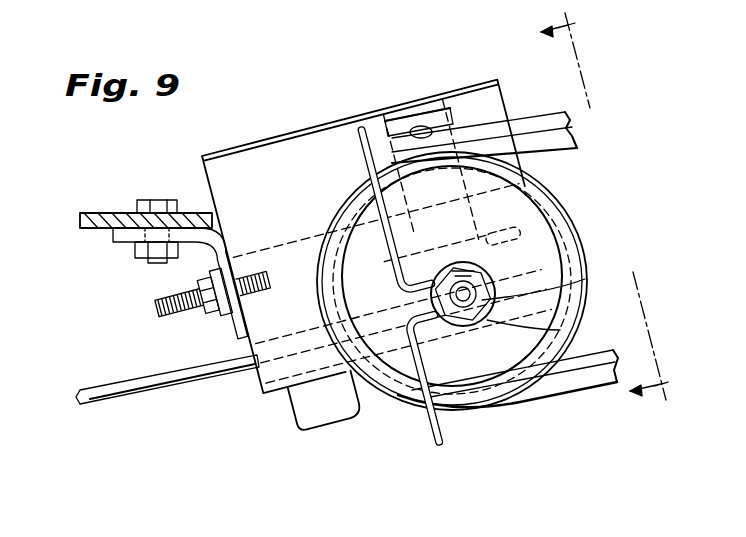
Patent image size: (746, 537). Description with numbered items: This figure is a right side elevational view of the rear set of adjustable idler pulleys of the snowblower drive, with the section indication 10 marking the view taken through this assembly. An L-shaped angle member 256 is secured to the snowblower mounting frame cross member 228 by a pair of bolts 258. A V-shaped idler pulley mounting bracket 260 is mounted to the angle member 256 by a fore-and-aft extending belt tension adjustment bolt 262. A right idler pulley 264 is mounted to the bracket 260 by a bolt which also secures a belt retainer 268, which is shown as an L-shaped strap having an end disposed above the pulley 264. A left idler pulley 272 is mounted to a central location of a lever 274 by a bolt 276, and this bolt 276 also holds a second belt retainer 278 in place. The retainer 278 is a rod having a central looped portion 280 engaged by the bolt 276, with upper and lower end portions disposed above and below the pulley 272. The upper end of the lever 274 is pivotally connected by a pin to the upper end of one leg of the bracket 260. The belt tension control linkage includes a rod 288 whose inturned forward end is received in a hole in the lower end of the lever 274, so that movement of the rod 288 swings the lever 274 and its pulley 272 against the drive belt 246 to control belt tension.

The section line for FIG. 10 is at (604, 209).
The snowblower mounting frame cross member 228 is at (110, 213).
The drive belt 246 is at (500, 408).
The L-shaped angle member 256 is at (210, 257).
The bolts 258 is at (156, 200).
The V-shaped idler pulley mounting bracket 260 is at (386, 259).
The belt tension adjustment bolt 262 is at (172, 322).
The right idler pulley 264 is at (565, 188).
The belt retainer 268 is at (383, 105).
The left idler pulley 272 is at (556, 330).
The lever 274 is at (460, 116).
The bolt 276 is at (491, 272).
The belt retainer 278 is at (428, 423).
The central looped portion 280 is at (580, 280).
The rod 288 is at (130, 400).